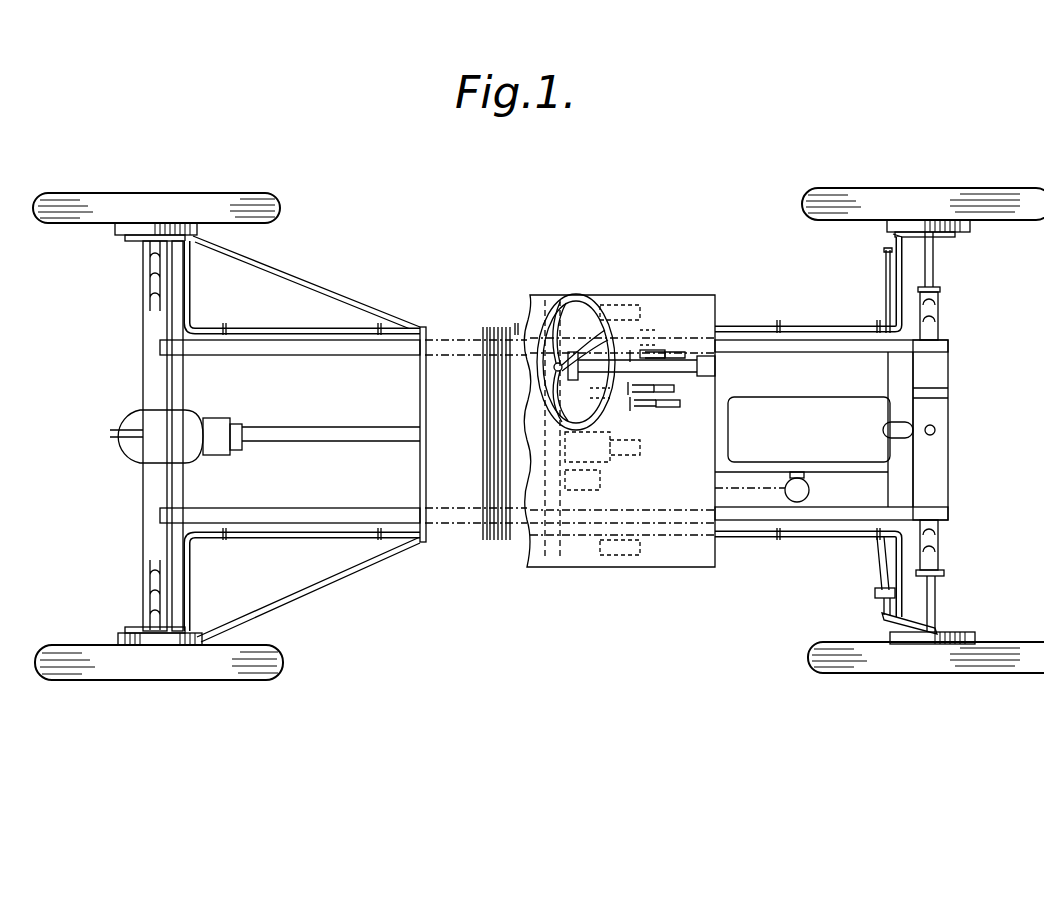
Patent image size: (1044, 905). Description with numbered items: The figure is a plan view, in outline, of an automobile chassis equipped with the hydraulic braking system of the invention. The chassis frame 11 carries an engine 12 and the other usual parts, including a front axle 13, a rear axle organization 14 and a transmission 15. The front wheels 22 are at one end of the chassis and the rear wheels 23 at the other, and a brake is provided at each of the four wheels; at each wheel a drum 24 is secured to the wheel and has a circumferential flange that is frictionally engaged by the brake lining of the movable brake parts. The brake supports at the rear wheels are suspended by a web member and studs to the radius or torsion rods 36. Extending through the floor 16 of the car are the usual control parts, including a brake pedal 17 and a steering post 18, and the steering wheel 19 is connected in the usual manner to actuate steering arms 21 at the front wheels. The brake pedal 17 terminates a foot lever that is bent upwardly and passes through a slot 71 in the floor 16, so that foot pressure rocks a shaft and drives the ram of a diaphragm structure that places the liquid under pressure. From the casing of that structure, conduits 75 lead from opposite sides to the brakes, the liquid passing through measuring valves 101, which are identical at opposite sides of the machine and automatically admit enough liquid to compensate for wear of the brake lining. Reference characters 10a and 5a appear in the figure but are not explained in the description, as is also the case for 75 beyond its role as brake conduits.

The rear wheels 23 is at (215, 193).
The front wheels 22 is at (955, 190).
The drum 24 is at (950, 230).
The rear axle organization 14 is at (183, 386).
The radius or torsion rods 36 is at (300, 270).
The pipe line 10a is at (292, 312).
The chassis frame 11 is at (330, 357).
The engine 12 is at (800, 410).
The transmission 15 is at (205, 455).
The front axle 13 is at (940, 268).
The steering arms 21 is at (893, 240).
The floor 16 is at (619, 448).
The measuring valves 101 is at (610, 300).
The steering wheel 19 is at (582, 300).
The steering post 18 is at (705, 345).
The slot 71 is at (698, 385).
The brake pedal 17 is at (652, 415).
The control member 5a is at (602, 460).
The conduits 75 is at (591, 488).